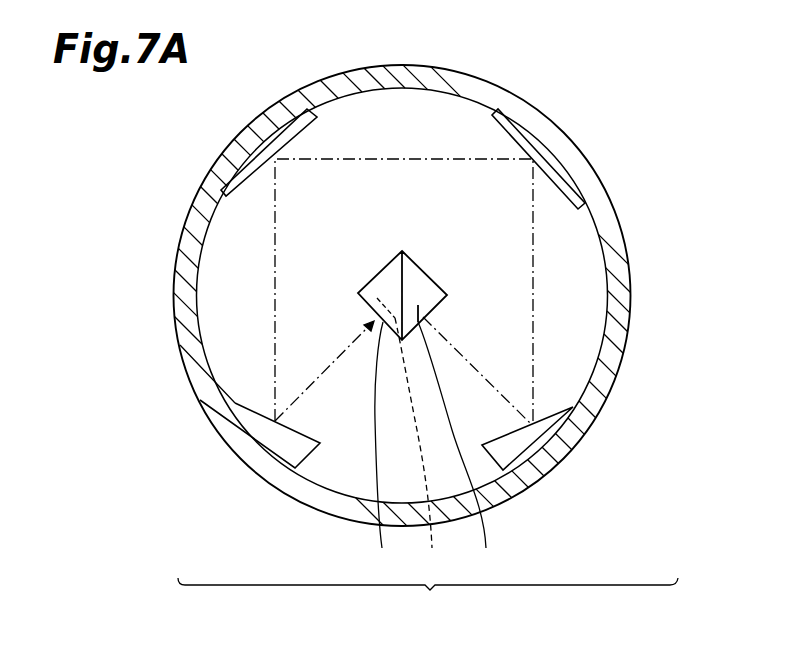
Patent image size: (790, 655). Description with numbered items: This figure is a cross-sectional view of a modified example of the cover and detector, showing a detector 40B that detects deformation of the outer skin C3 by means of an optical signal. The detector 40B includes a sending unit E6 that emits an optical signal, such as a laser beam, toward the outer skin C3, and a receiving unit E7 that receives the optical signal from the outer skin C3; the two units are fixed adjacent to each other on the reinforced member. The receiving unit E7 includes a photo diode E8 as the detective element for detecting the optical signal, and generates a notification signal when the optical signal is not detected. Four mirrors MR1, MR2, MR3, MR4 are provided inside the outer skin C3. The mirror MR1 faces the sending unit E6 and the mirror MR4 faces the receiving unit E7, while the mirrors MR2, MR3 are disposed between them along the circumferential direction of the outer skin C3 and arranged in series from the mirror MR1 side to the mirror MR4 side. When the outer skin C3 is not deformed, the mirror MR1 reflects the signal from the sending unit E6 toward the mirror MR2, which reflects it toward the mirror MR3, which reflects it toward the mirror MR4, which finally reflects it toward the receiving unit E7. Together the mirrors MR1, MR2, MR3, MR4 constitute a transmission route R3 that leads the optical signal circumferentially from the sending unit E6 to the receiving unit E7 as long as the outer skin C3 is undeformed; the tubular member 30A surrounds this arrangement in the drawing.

The outer skin C3 is at (431, 65).
The tubular member 30A is at (489, 77).
The transmission route R3 is at (357, 159).
The mirror MR1 is at (523, 445).
The mirror MR2 is at (562, 215).
The mirror MR3 is at (243, 178).
The mirror MR4 is at (283, 443).
The sending unit E6 is at (460, 452).
The receiving unit E7 is at (376, 452).
The photo diode E8 is at (420, 450).
The detector 40B is at (428, 603).